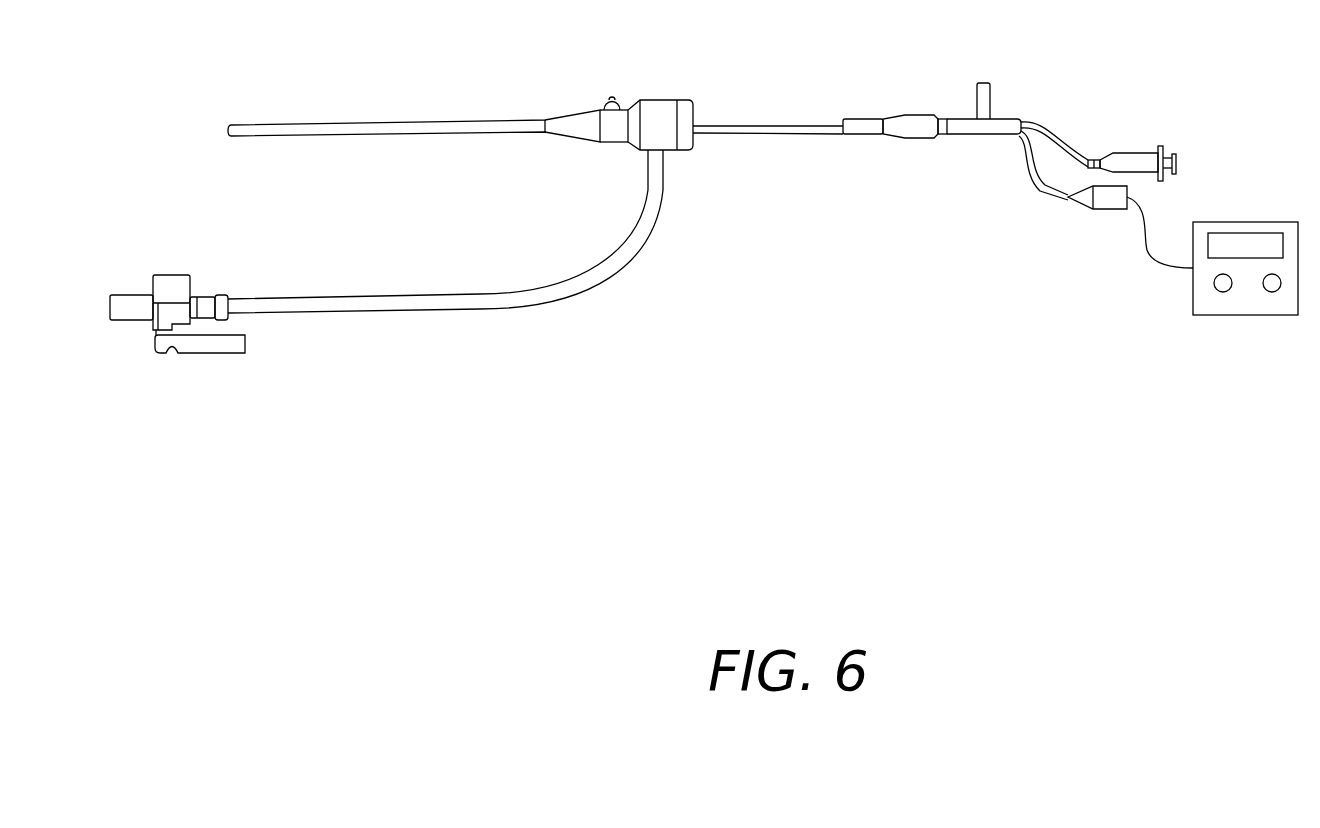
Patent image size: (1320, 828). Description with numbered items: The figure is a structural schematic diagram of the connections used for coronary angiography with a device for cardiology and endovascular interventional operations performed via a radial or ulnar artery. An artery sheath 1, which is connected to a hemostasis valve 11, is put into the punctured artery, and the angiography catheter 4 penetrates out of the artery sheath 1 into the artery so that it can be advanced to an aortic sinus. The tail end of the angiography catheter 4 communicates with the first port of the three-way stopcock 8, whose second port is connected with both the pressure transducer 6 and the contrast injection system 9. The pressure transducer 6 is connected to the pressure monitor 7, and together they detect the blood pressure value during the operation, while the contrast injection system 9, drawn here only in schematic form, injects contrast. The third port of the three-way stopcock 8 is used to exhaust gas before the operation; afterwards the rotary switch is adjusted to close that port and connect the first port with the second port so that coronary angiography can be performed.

The artery sheath 1 is at (636, 118).
The angiography catheter 4 is at (747, 125).
The pressure transducer 6 is at (1097, 198).
The pressure monitor 7 is at (1208, 224).
The three-way stopcock 8 is at (977, 128).
The contrast injection system 9 is at (1150, 162).
The hemostasis valve 11 is at (133, 303).